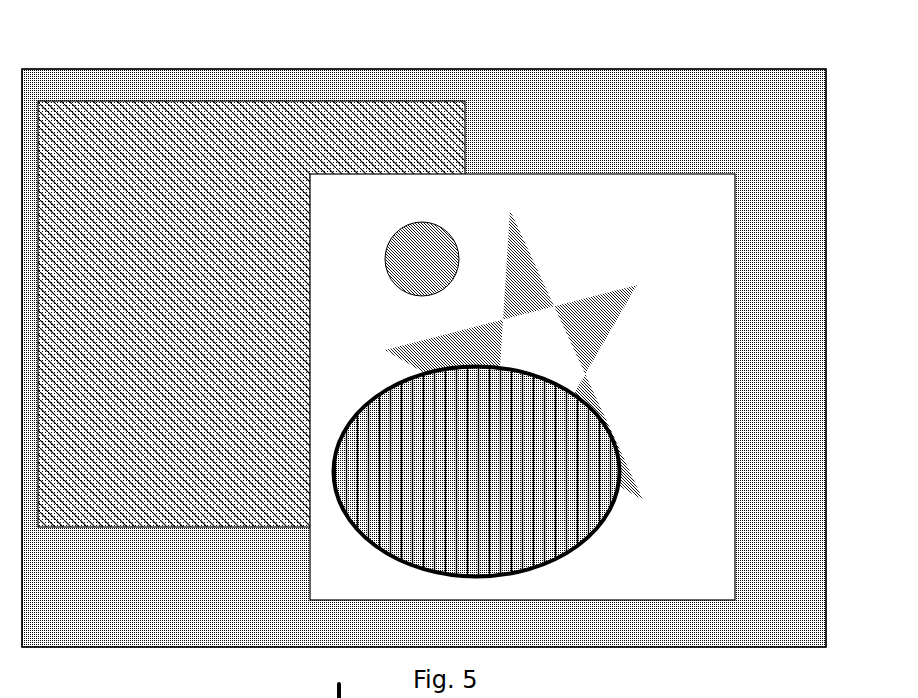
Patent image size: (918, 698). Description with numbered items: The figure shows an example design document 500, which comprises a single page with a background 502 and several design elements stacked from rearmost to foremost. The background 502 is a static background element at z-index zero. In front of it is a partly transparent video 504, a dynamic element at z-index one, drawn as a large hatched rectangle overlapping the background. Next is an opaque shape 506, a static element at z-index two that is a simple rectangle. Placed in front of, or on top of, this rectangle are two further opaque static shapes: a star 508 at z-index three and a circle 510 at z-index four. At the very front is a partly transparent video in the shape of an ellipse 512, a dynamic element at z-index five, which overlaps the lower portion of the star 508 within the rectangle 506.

The design document 500 is at (118, 58).
The background 502 is at (591, 68).
The partly transparent video 504 is at (464, 100).
The opaque shape 506 is at (521, 174).
The star 508 is at (642, 286).
The circle 510 is at (433, 222).
The ellipse 512 is at (587, 541).